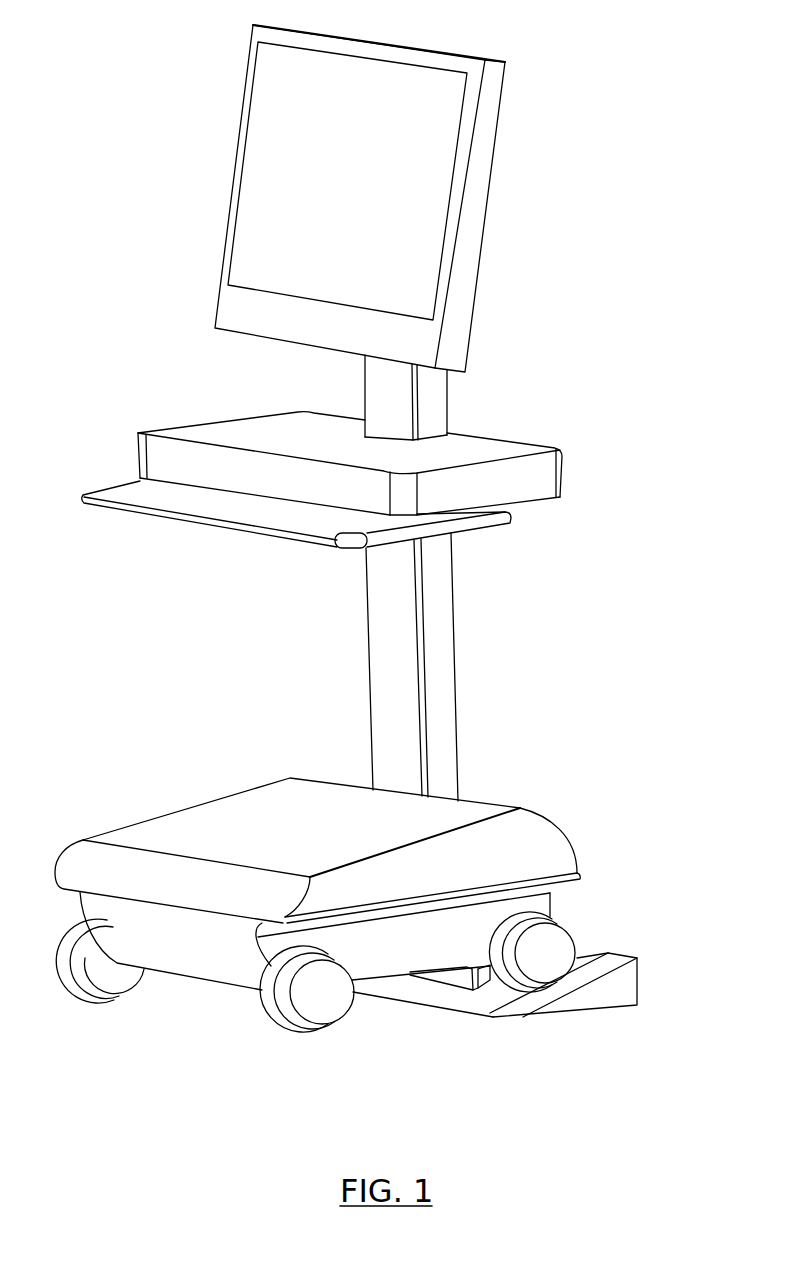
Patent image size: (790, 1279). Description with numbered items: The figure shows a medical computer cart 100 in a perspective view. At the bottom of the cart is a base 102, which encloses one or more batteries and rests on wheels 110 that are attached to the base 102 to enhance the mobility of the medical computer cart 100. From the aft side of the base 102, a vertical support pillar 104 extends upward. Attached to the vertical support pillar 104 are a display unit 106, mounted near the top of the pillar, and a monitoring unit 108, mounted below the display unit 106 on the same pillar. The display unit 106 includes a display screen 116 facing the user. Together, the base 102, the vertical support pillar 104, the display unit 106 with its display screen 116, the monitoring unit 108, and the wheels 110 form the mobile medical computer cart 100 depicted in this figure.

The medical computer cart 100 is at (592, 152).
The base 102 is at (317, 841).
The vertical support pillar 104 is at (440, 662).
The display unit 106 is at (233, 165).
The monitoring unit 108 is at (203, 430).
The wheels 110 is at (110, 975).
The display screen 116 is at (360, 190).